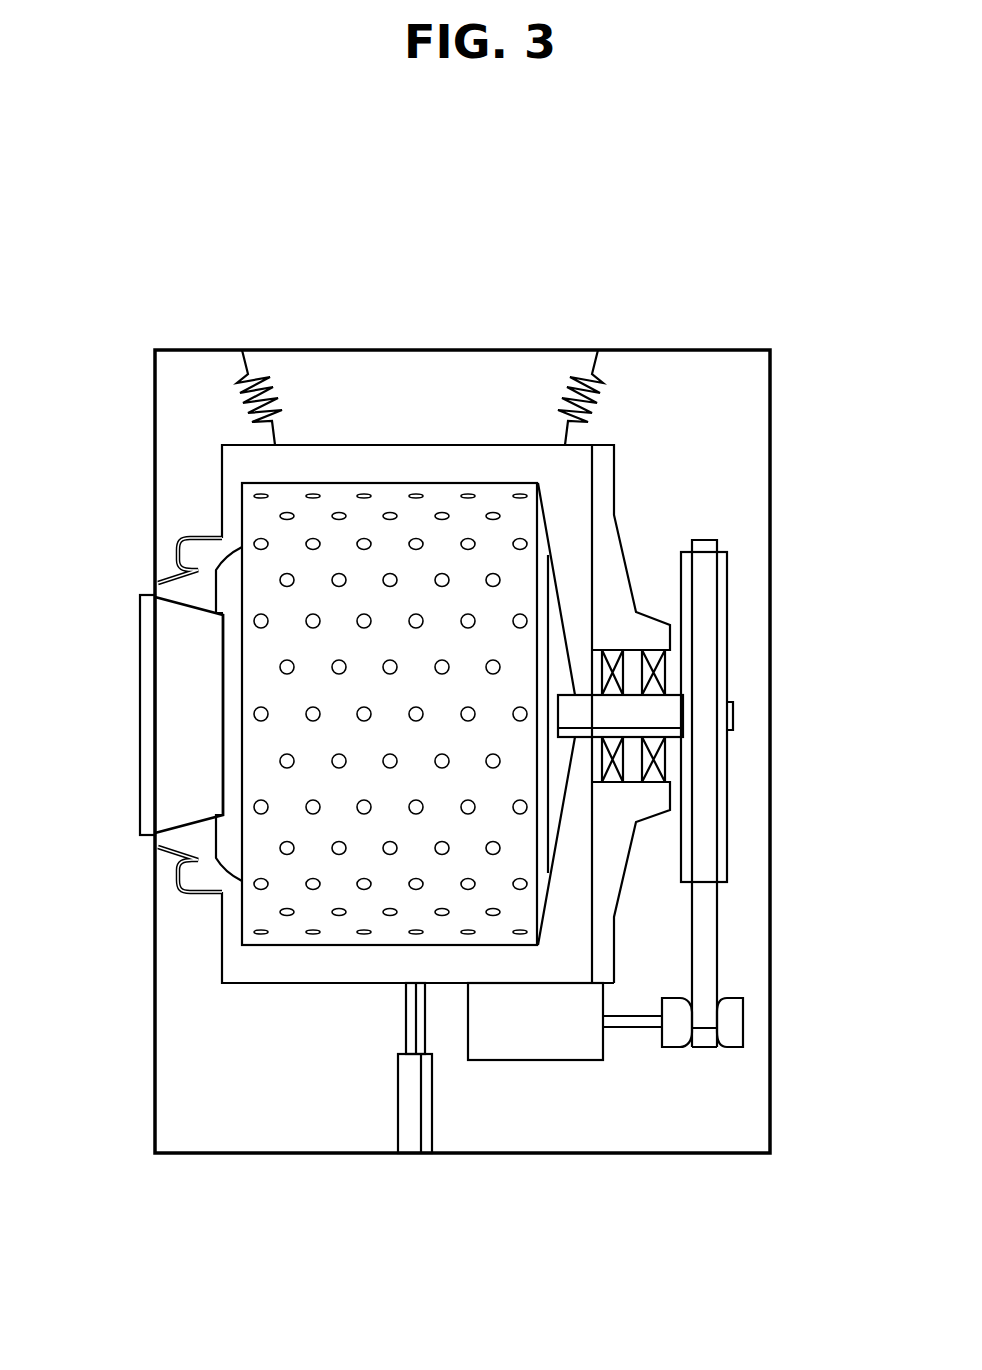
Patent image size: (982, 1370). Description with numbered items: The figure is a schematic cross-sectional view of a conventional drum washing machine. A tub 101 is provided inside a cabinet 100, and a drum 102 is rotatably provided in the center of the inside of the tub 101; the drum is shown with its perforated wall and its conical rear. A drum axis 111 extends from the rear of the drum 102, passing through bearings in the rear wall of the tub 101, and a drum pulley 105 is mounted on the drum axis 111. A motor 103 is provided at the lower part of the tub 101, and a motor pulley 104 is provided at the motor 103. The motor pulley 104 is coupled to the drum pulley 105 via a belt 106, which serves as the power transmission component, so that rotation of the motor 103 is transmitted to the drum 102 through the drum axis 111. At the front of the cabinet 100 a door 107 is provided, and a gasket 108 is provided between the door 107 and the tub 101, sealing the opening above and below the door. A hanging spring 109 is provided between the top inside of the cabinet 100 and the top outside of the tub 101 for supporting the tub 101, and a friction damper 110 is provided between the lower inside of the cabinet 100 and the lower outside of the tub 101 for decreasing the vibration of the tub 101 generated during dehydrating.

The cabinet 100 is at (187, 350).
The tub 101 is at (430, 445).
The drum 102 is at (258, 514).
The motor 103 is at (567, 1050).
The motor pulley 104 is at (730, 1021).
The drum pulley 105 is at (725, 782).
The belt 106 is at (702, 945).
The door 107 is at (173, 713).
The gasket 108 is at (178, 547).
The hanging spring 109 is at (558, 390).
The friction damper 110 is at (407, 1103).
The drum axis 111 is at (656, 704).